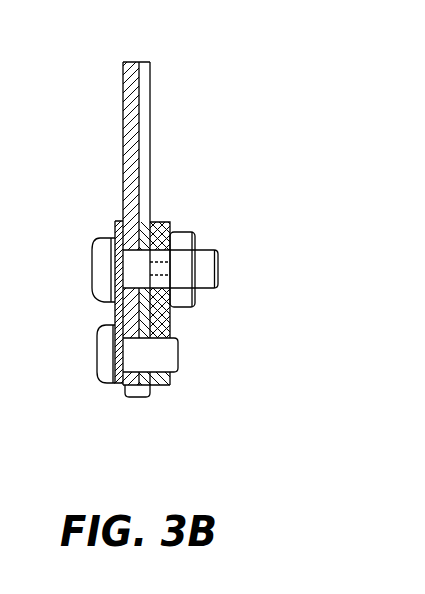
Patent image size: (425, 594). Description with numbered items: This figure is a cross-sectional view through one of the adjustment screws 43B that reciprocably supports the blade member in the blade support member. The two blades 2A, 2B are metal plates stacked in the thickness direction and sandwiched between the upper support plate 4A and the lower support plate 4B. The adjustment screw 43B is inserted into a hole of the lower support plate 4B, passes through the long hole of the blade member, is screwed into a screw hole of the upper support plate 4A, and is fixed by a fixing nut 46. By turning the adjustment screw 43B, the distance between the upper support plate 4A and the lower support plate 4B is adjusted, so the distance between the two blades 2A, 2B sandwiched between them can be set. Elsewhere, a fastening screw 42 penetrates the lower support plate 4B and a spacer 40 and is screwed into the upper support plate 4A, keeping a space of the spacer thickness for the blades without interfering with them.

The blade 2A is at (150, 88).
The blade 2B is at (123, 128).
The upper support plate 4A is at (154, 222).
The lower support plate 4B is at (115, 222).
The spacer 40 is at (130, 397).
The fastening screw 42 is at (180, 353).
The adjustment screw 43B is at (218, 250).
The fixing nut 46 is at (182, 230).